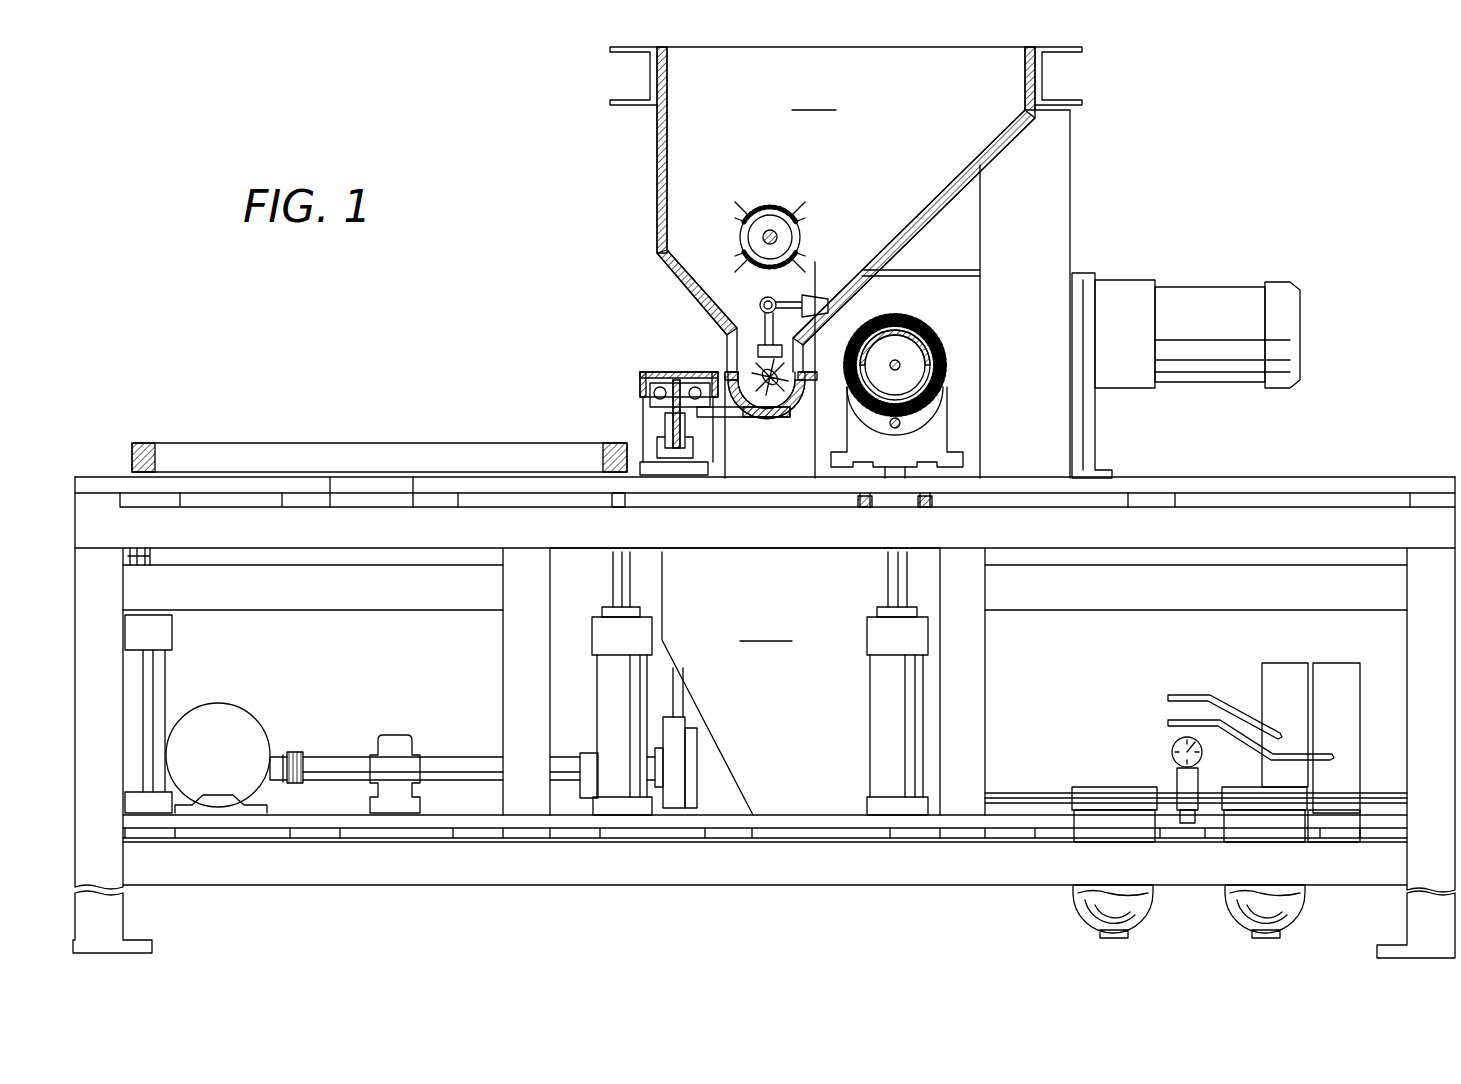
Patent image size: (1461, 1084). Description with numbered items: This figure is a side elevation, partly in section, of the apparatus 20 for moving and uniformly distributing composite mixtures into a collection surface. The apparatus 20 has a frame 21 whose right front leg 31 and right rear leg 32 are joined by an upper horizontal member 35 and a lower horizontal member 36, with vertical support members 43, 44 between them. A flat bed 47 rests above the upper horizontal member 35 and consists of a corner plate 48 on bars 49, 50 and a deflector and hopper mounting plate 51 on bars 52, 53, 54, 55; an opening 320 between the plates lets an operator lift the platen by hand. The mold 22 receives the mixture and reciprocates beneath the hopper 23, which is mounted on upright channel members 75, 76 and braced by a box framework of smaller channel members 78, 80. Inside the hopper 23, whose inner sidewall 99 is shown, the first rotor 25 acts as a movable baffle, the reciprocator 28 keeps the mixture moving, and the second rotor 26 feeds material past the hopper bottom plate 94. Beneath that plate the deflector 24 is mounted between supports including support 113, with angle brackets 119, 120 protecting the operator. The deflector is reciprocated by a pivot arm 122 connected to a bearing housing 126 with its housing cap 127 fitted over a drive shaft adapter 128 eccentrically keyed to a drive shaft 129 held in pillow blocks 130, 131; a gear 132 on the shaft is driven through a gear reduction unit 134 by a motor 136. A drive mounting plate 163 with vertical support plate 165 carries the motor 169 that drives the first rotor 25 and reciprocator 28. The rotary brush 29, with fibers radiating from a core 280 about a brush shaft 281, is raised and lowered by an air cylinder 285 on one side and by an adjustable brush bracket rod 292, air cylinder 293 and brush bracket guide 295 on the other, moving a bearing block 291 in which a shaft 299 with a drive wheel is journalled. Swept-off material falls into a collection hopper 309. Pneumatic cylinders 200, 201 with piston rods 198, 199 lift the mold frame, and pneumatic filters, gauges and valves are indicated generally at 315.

The apparatus 20 is at (330, 340).
The frame 21 is at (150, 912).
The mold 22 is at (282, 450).
The hopper 23 is at (655, 160).
The deflector 24 is at (742, 414).
The first rotor 25 is at (803, 236).
The second rotor 26 is at (808, 334).
The reciprocator 28 is at (770, 297).
The rotary brush 29 is at (915, 320).
The right front leg 31 is at (105, 866).
The right rear leg 32 is at (1410, 912).
The upper horizontal member 35 is at (710, 545).
The lower horizontal member 36 is at (738, 866).
The vertical support member 43 is at (528, 670).
The vertical support member 44 is at (962, 699).
The flat bed 47 is at (125, 470).
The corner plate 48 is at (208, 498).
The bar 49 is at (110, 505).
The bar 50 is at (296, 508).
The deflector and hopper mounting plate 51 is at (590, 492).
The bar 52 is at (452, 503).
The bar 53 is at (726, 503).
The bar 54 is at (1140, 503).
The bar 55 is at (1440, 505).
The upright channel member 75 is at (1050, 212).
The upright channel member 76 is at (733, 350).
The channel member 78 is at (647, 88).
The channel member 80 is at (1048, 88).
The hopper bottom plate 94 is at (790, 392).
The inner sidewall 99 is at (814, 97).
The support 113 is at (700, 432).
The angle bracket 119 is at (653, 368).
The angle bracket 120 is at (710, 368).
The pivot arm 122 is at (675, 697).
The bearing housing 126 is at (678, 728).
The housing cap 127 is at (698, 752).
The drive shaft adapter 128 is at (658, 775).
The drive shaft 129 is at (325, 768).
The pillow block 130 is at (590, 755).
The pillow block 131 is at (397, 738).
The gear 132 is at (290, 750).
The gear reduction unit 134 is at (272, 770).
The motor 136 is at (225, 715).
The drive mounting plate 163 is at (905, 274).
The vertical support plate 165 is at (1090, 432).
The motor 169 is at (1214, 372).
The piston rod 198 is at (130, 568).
The piston rod 199 is at (610, 580).
The pneumatic cylinder 200 is at (150, 690).
The pneumatic cylinder 201 is at (620, 710).
The core 280 is at (937, 365).
The brush shaft 281 is at (897, 358).
The air cylinder 285 is at (898, 750).
The bearing block 291 is at (938, 417).
The adjustable brush bracket rod 292 is at (888, 578).
The air cylinder 293 is at (813, 553).
The brush bracket guide 295 is at (865, 507).
The shaft 299 is at (888, 422).
The collection hopper 309 is at (766, 629).
The pneumatic components 315 is at (1162, 750).
The opening 320 is at (392, 508).